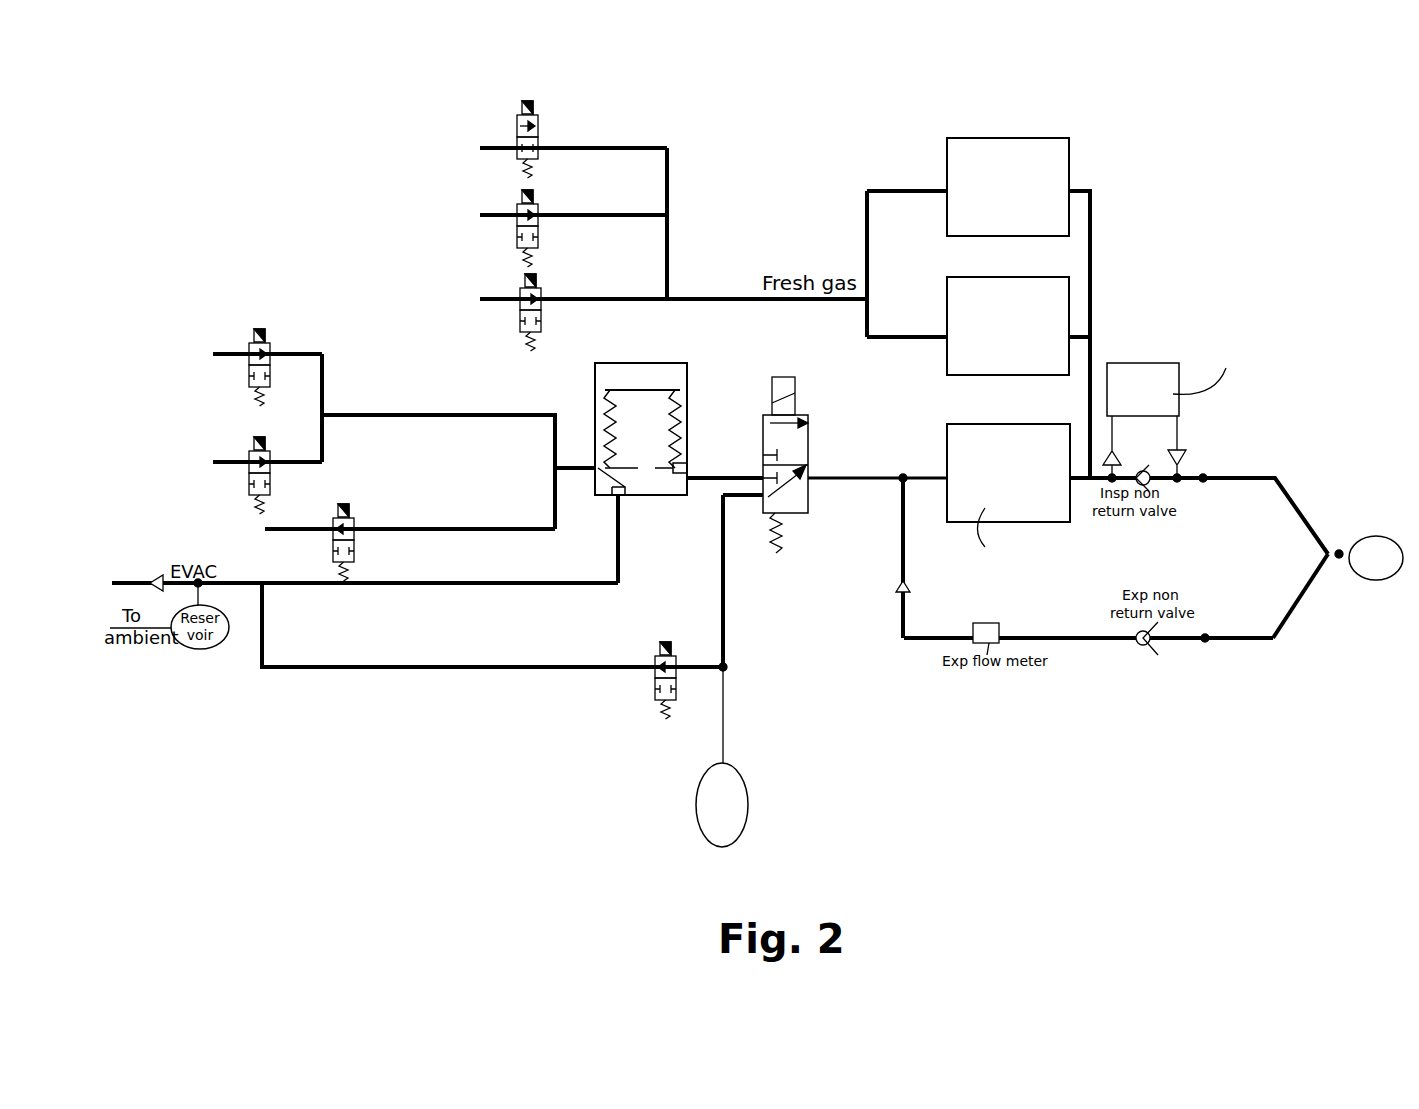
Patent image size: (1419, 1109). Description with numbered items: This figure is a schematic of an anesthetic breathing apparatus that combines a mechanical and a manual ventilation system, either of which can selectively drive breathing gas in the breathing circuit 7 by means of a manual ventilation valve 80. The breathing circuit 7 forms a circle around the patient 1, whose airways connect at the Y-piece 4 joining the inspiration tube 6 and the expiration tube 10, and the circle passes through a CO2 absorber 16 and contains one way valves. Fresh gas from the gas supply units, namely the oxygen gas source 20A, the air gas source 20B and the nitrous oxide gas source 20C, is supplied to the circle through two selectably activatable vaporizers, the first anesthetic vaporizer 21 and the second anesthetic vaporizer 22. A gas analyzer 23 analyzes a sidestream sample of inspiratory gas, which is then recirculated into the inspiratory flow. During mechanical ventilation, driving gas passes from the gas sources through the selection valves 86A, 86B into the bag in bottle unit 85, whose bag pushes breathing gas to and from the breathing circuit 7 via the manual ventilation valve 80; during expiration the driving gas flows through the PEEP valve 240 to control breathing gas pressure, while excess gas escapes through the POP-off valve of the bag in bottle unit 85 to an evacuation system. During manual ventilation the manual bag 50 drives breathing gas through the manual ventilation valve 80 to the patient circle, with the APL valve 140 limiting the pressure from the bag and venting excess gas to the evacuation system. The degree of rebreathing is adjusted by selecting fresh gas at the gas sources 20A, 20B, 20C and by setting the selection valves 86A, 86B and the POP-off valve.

The oxygen gas source 20A is at (549, 139).
The air gas source 20B is at (549, 228).
The nitrous oxide gas source 20C is at (649, 312).
The selection valve 86A is at (247, 343).
The selection valve 86B is at (247, 452).
The bag in bottle unit 85 is at (678, 398).
The manual ventilation valve 80 is at (792, 503).
The PEEP valve 240 is at (356, 538).
The APL valve 140 is at (661, 697).
The manual bag 50 is at (720, 830).
The first anesthetic vaporizer 21 is at (1008, 187).
The second anesthetic vaporizer 22 is at (1008, 326).
The gas analyzer 23 is at (1210, 394).
The CO2 absorber 16 is at (1011, 505).
The inspiration tube 6 is at (1252, 474).
The Y-piece 4 is at (1323, 560).
The patient 1 is at (1376, 558).
The expiration tube 10 is at (1205, 646).
The breathing circuit 7 is at (1103, 688).